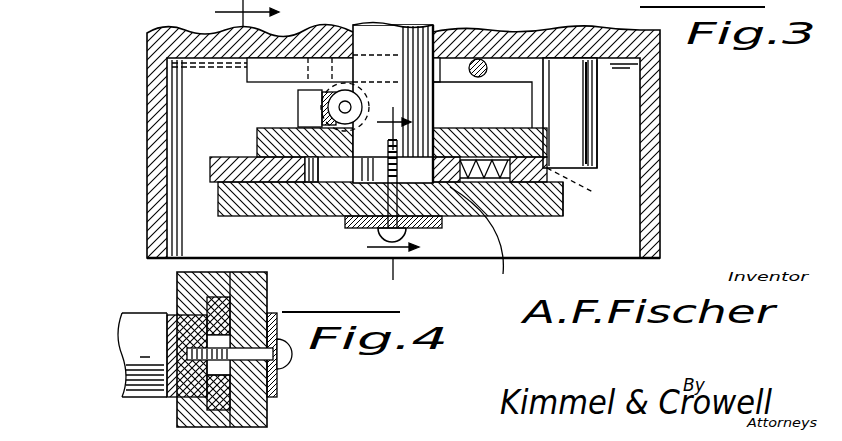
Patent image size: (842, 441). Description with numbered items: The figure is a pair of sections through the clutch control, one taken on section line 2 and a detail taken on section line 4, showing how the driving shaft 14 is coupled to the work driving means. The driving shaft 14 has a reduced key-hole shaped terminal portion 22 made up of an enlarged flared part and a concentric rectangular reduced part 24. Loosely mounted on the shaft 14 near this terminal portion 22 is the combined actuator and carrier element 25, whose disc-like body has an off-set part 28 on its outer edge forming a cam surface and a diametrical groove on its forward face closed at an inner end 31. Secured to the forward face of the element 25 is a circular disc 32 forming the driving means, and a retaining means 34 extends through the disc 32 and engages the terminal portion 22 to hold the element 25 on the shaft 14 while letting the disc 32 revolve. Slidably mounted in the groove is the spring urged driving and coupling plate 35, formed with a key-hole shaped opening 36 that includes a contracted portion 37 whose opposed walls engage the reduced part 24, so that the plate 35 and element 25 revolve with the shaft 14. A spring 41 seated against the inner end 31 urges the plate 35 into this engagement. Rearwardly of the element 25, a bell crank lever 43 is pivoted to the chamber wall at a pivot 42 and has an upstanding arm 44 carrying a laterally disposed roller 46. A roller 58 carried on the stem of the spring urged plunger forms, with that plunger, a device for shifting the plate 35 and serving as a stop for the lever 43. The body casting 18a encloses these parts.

In FIG. 3, the section line 2- 2 is at (237, 13).
In FIG. 3, the plunger / section line 4- 4 is at (393, 160).
In FIG. 3, the operating or driving shaft 14 is at (426, 101).
In FIG. 4, the operating or driving shaft 14 is at (140, 397).
In FIG. 3, the housing 18a is at (452, 28).
In FIG. 3, the reduced forward end terminal portion 22 is at (345, 172).
In FIG. 3, the reduced part 24 is at (480, 240).
In FIG. 4, the reduced part 24 is at (213, 341).
In FIG. 3, the combined actuator and carrier element 25 is at (277, 126).
In FIG. 3, the off-set part forming cam surface 28 is at (512, 130).
In FIG. 4, the off-set part forming cam surface 28 is at (268, 300).
In FIG. 3, the closed inner end of groove 31 is at (557, 217).
In FIG. 3, the circular disc 32 is at (244, 213).
In FIG. 3, the retaining means 34 is at (418, 236).
In FIG. 4, the retaining means 34 is at (281, 375).
In FIG. 3, the driving and coupling plate 35 is at (262, 172).
In FIG. 3, the key-hole shaped opening 36 is at (318, 176).
In FIG. 4, the contracted portion 37 is at (271, 405).
In FIG. 3, the spring 41 is at (504, 193).
In FIG. 3, the pivot 42 is at (574, 193).
In FIG. 3, the bell crank lever 43 is at (603, 163).
In FIG. 3, the upstanding arm 44 is at (600, 93).
In FIG. 3, the roller 46 is at (595, 145).
In FIG. 3, the roller 58 is at (326, 103).